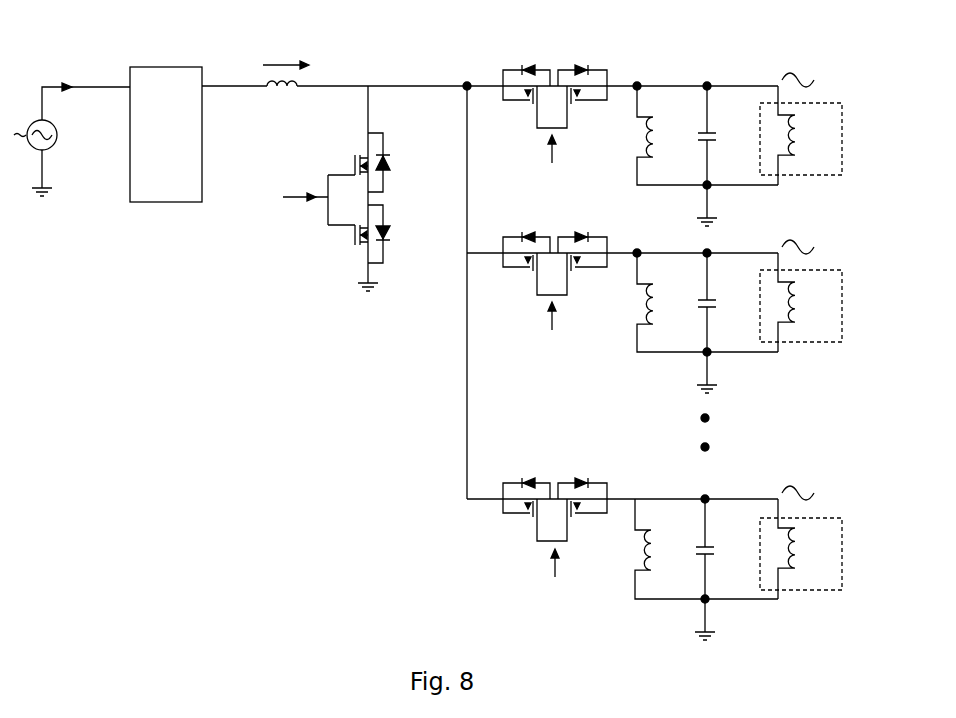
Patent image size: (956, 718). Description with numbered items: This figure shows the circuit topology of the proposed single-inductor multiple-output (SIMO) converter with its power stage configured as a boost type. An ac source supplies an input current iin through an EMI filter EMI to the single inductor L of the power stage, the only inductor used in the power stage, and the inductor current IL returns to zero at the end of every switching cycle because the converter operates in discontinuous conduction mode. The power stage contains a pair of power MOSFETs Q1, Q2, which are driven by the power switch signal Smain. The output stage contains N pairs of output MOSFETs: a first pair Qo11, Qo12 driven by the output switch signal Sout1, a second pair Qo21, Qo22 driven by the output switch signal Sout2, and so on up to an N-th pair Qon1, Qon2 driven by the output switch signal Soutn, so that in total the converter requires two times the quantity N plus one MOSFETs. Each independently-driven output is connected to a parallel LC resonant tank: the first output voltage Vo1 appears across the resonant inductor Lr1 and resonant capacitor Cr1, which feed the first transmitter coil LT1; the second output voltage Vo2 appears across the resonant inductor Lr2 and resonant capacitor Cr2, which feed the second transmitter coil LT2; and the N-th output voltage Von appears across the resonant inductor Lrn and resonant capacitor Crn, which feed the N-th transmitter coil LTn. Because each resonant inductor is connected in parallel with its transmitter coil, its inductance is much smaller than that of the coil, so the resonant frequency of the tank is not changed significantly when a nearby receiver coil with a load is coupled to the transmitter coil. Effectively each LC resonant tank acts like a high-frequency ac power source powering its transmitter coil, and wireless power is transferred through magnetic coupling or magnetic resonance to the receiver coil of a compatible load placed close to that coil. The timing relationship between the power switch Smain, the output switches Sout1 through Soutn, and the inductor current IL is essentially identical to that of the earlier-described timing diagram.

The input current / AC source iin is at (72, 121).
The EMI filter EMI is at (166, 134).
The input inductor L is at (267, 73).
The inductor current IL is at (286, 53).
The power switch Smain is at (280, 200).
The power MOSFET Q1 is at (391, 162).
The power MOSFET Q2 is at (391, 234).
The output MOSFET Qo11 is at (523, 82).
The output MOSFET Qo12 is at (579, 82).
The output switch Sout1 is at (551, 166).
The resonant inductor 1 Lr1 is at (707, 135).
The resonant capacitor 1 Cr1 is at (695, 154).
The TX coil 1 inductance LT1 is at (805, 143).
The output voltage 1 Vo1 is at (767, 73).
The output MOSFET Qo21 is at (523, 249).
The output MOSFET Qo22 is at (579, 249).
The output switch Sout2 is at (551, 333).
The resonant inductor 2 Lr2 is at (707, 302).
The resonant capacitor 2 Cr2 is at (695, 321).
The TX coil 2 inductance LT2 is at (805, 310).
The output voltage 2 Vo2 is at (767, 240).
The output MOSFET Qon1 is at (524, 495).
The output MOSFET Qon2 is at (580, 495).
The output switch Soutn is at (555, 580).
The resonant inductor n Lrn is at (706, 549).
The resonant capacitor n Crn is at (725, 567).
The TX coil n inductance LTn is at (805, 557).
The output voltage n Von is at (766, 486).